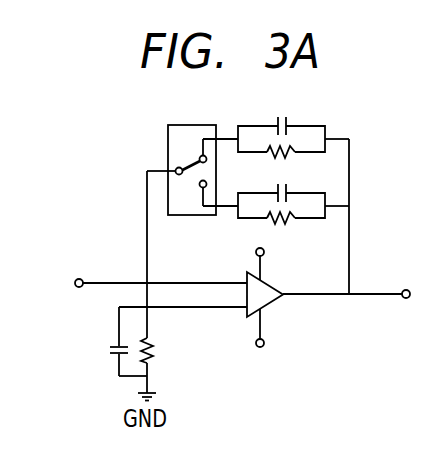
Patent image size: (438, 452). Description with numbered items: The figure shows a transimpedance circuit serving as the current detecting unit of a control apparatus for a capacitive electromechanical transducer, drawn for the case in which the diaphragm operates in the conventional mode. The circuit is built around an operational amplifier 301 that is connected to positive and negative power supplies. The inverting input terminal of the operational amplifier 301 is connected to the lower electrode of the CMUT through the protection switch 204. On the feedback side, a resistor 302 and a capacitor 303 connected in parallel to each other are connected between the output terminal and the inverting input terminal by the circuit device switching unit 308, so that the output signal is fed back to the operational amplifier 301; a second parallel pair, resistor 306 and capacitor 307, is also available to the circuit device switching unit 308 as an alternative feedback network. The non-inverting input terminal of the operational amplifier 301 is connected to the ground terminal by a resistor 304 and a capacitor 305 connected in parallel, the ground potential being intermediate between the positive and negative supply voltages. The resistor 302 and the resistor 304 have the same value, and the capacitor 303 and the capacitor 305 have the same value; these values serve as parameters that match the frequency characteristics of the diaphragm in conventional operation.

The protection switch 204 is at (56, 267).
The operational amplifier 301 is at (266, 306).
The resistor 302 is at (293, 153).
The capacitor 303 is at (285, 117).
The resistor 304 is at (145, 362).
The capacitor 305 is at (108, 349).
The resistor 306 is at (293, 219).
The capacitor 307 is at (287, 185).
The circuit device switching unit 308 is at (168, 133).